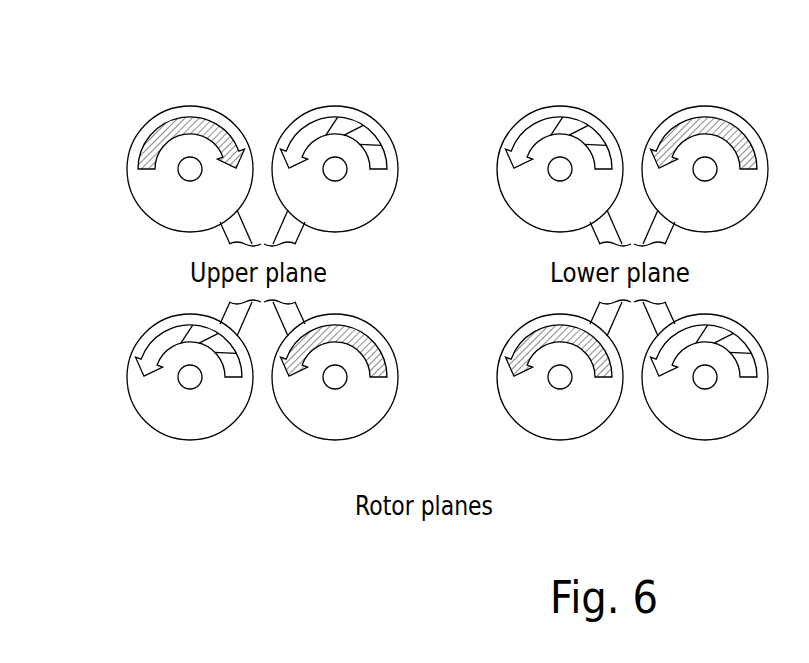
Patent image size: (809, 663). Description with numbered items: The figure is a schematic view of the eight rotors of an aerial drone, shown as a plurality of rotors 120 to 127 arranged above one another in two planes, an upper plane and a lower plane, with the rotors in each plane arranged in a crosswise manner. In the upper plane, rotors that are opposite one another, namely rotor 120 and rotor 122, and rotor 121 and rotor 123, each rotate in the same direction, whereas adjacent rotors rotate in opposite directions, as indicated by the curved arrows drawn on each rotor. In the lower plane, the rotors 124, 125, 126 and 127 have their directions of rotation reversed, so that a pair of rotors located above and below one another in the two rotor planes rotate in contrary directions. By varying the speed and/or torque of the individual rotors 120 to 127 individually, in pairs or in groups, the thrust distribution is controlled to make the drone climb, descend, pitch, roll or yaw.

The rotor 120 is at (147, 178).
The rotor 121 is at (350, 113).
The rotor 122 is at (327, 428).
The rotor 123 is at (185, 423).
The rotor 124 is at (565, 122).
The rotor 125 is at (710, 117).
The rotor 126 is at (700, 423).
The rotor 127 is at (555, 425).